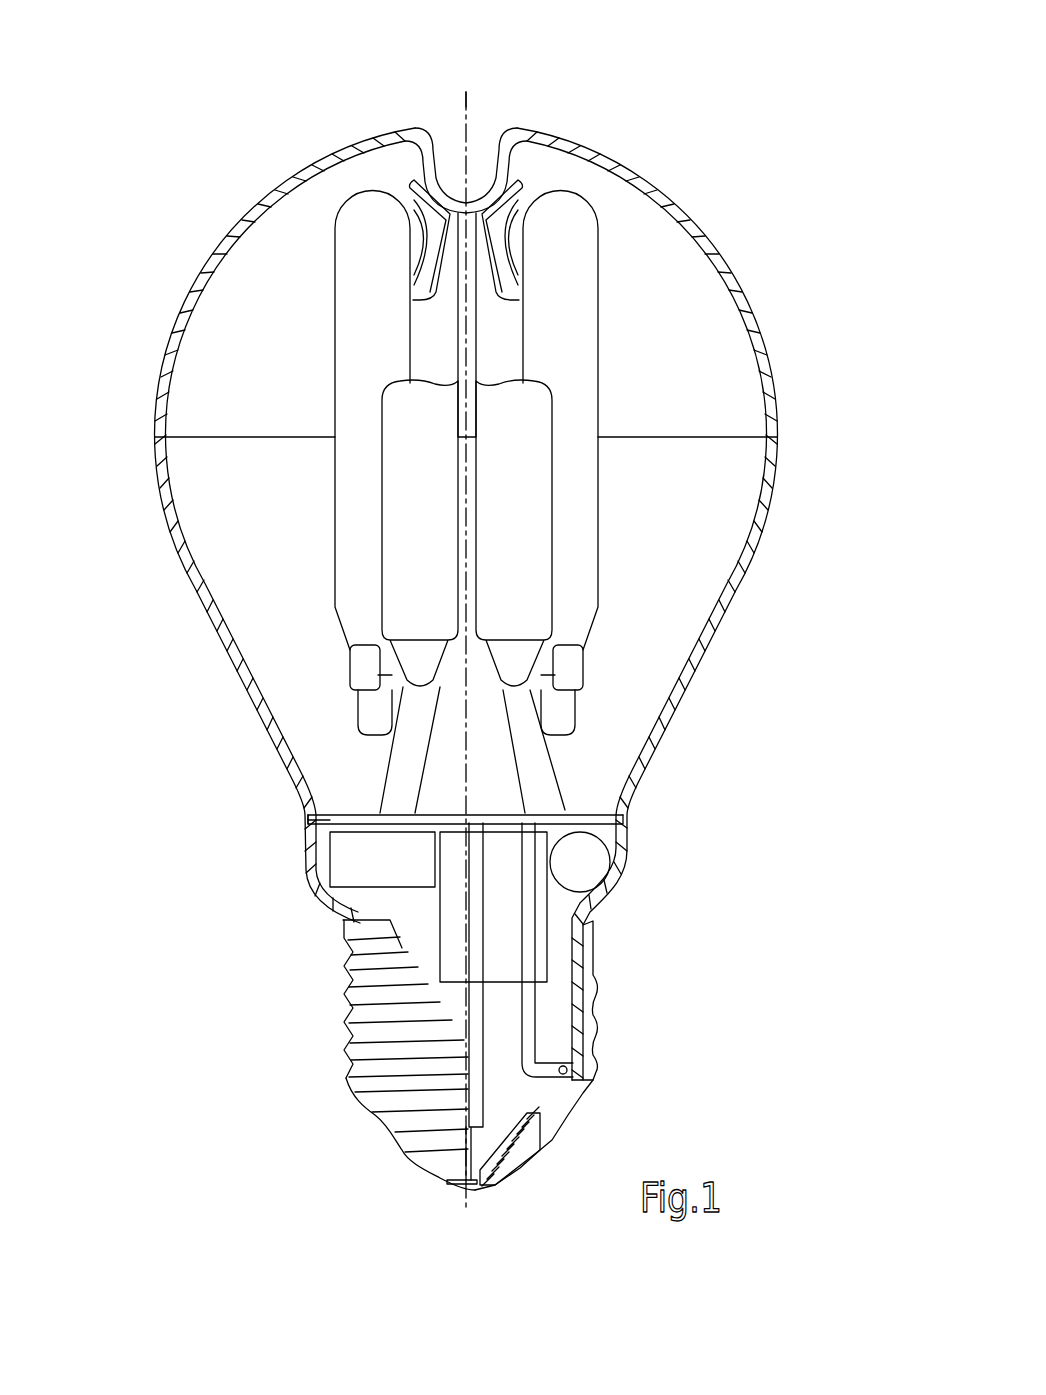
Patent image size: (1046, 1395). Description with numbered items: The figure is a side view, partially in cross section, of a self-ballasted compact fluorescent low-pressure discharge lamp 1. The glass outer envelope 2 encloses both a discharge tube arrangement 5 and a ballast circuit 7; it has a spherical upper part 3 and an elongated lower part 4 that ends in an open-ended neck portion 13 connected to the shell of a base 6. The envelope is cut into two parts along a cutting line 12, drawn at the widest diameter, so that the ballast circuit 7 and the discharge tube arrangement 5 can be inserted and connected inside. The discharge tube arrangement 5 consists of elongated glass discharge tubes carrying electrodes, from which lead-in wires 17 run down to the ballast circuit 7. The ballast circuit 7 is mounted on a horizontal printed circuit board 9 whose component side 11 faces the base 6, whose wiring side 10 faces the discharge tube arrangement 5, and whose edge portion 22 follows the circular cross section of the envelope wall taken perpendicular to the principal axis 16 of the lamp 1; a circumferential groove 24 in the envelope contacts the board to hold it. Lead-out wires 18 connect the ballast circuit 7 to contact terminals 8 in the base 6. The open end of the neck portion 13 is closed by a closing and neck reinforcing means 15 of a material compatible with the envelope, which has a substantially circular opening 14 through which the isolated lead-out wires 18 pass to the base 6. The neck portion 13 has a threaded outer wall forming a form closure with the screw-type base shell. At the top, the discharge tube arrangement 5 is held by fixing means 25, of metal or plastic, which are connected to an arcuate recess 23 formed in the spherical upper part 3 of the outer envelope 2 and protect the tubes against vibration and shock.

The low-pressure discharge lamp 1 is at (758, 673).
The outer envelope 2 is at (757, 317).
The spherical upper part 3 is at (180, 308).
The elongated lower part 4 is at (312, 905).
The discharge tube arrangement 5 is at (347, 472).
The base 6 is at (347, 1032).
The ballast circuit 7 is at (355, 867).
The contact terminals 8 is at (597, 930).
The printed circuit board 9 is at (618, 818).
The wiring side 10 is at (610, 813).
The component side 11 is at (625, 858).
The cutting line 12 is at (693, 432).
The neck portion 13 is at (583, 1007).
The substantially circular opening 14 is at (535, 1043).
The closing and neck reinforcing means 15 is at (580, 1075).
The principal axis 16 is at (468, 100).
The lead-in wires 17 is at (380, 794).
The lead-out wires 18 is at (477, 1095).
The edge portion 22 is at (307, 816).
The arcuate recess 23 is at (440, 152).
The circumferential groove 24 is at (307, 823).
The fixing means 25 is at (523, 188).